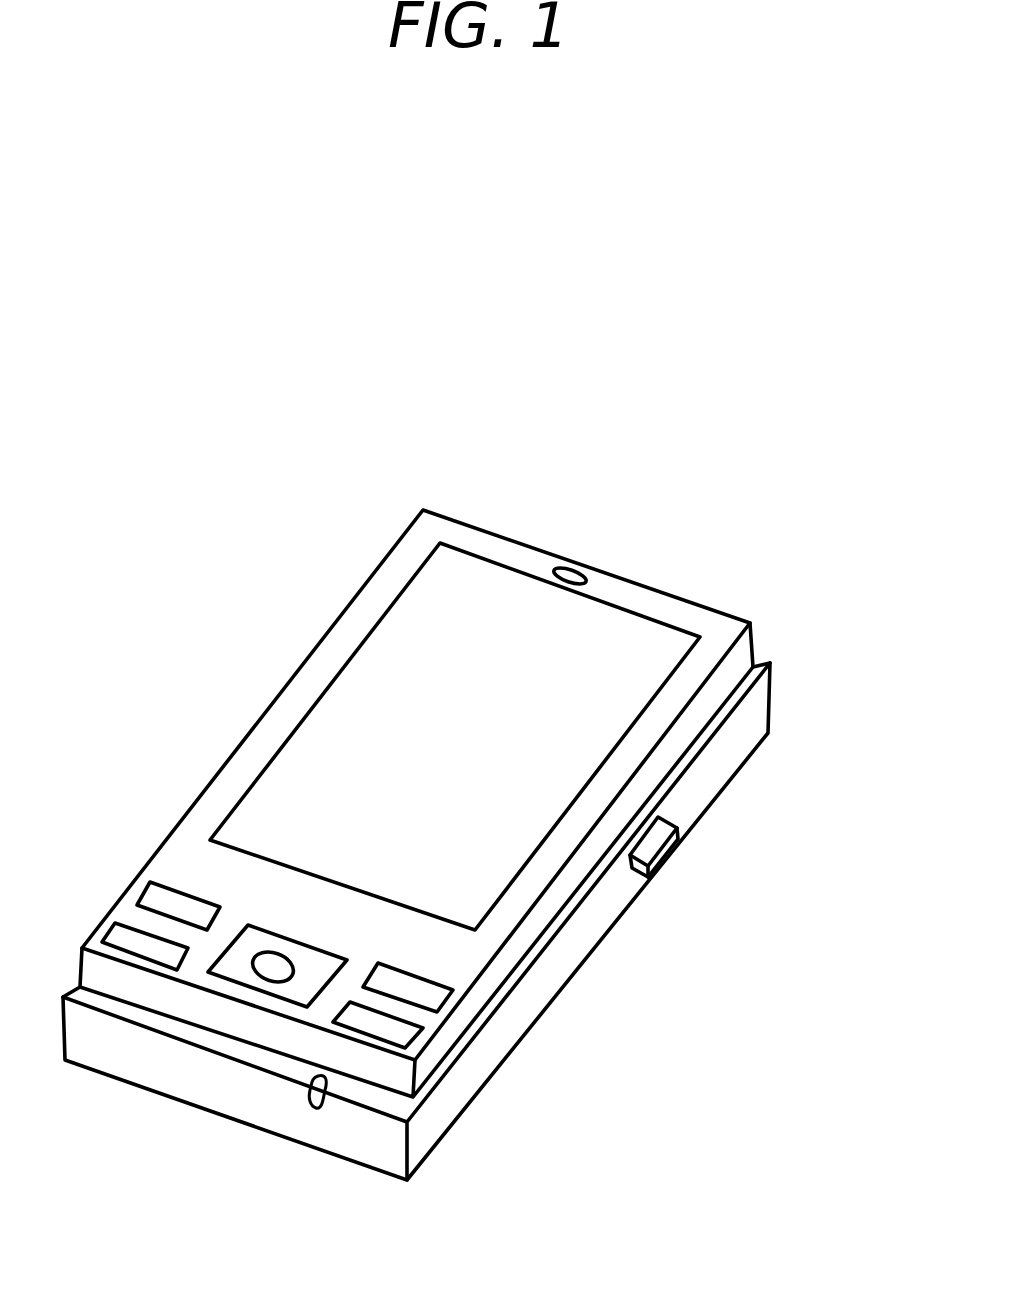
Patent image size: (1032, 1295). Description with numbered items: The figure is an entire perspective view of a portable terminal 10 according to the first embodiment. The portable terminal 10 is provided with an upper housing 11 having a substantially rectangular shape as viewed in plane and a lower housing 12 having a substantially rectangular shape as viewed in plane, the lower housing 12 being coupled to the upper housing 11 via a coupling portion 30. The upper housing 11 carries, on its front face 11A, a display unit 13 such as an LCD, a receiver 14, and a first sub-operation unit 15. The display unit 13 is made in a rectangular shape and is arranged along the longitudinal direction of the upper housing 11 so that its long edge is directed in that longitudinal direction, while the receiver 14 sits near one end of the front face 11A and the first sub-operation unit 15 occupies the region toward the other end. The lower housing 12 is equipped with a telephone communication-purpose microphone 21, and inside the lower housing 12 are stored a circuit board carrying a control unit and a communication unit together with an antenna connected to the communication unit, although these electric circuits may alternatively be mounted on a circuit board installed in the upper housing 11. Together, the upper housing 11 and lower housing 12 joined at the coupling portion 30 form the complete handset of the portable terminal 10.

The portable terminal 10 is at (460, 841).
The upper housing 11 is at (469, 797).
The front face of the upper housing 11A is at (720, 633).
The lower housing 12 is at (687, 800).
The display unit 13 is at (317, 777).
The receiver 14 is at (577, 568).
The first sub-operation unit 15 is at (432, 1022).
The telephone communication-purpose microphone 21 is at (310, 1097).
The coupling portion 30 is at (416, 954).